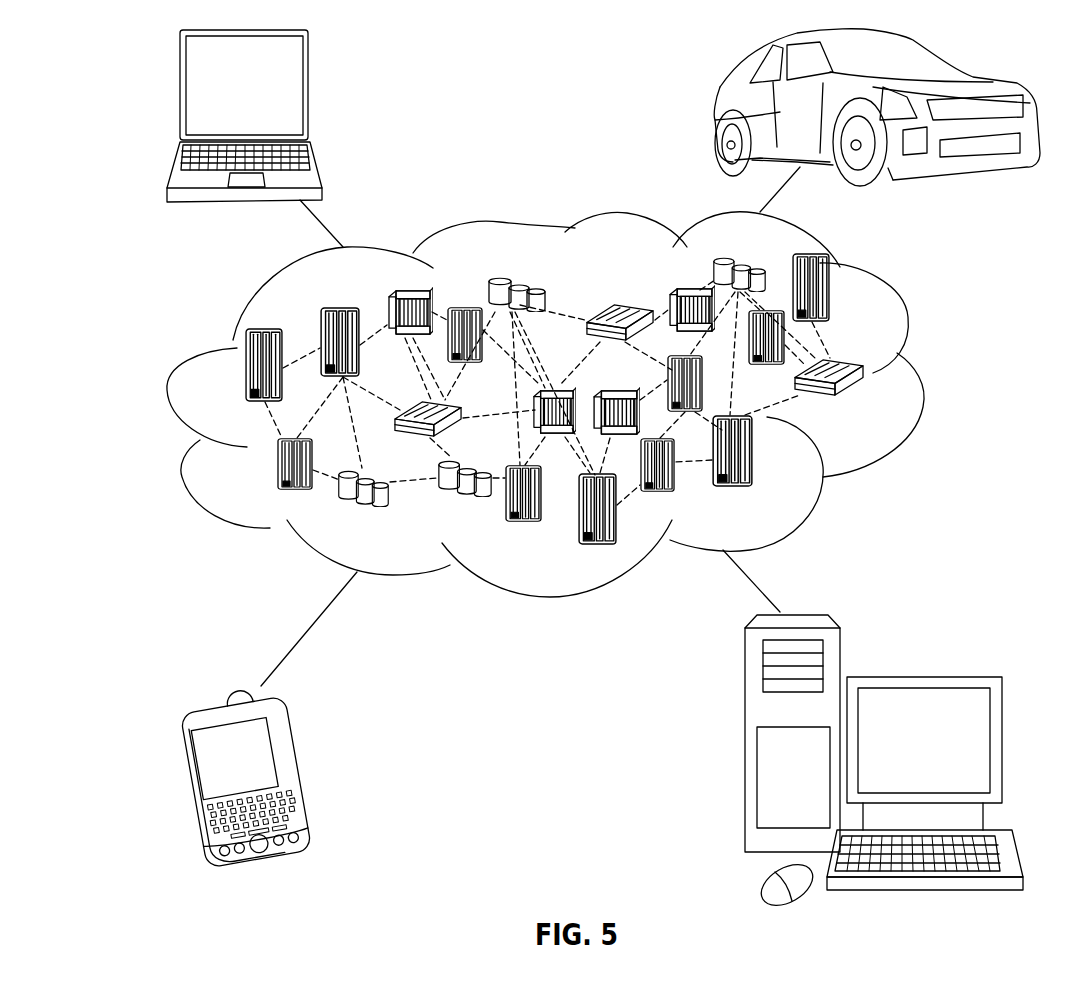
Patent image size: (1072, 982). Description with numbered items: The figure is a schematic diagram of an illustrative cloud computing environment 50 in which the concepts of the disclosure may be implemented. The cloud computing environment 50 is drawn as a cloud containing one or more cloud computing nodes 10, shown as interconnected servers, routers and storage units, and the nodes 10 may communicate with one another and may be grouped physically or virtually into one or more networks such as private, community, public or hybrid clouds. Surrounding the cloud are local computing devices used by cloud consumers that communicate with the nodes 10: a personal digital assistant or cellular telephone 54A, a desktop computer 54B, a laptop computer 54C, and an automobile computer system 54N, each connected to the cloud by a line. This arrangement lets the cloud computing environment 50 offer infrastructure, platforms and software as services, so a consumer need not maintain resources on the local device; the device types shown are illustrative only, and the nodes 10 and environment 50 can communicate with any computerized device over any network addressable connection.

The cloud computing nodes 10 is at (880, 414).
The cloud computing environment 50 is at (920, 380).
The personal digital assistant or cellular telephone 54A is at (300, 773).
The desktop computer 54B is at (920, 675).
The laptop computer 54C is at (310, 93).
The automobile computer system 54N is at (713, 105).